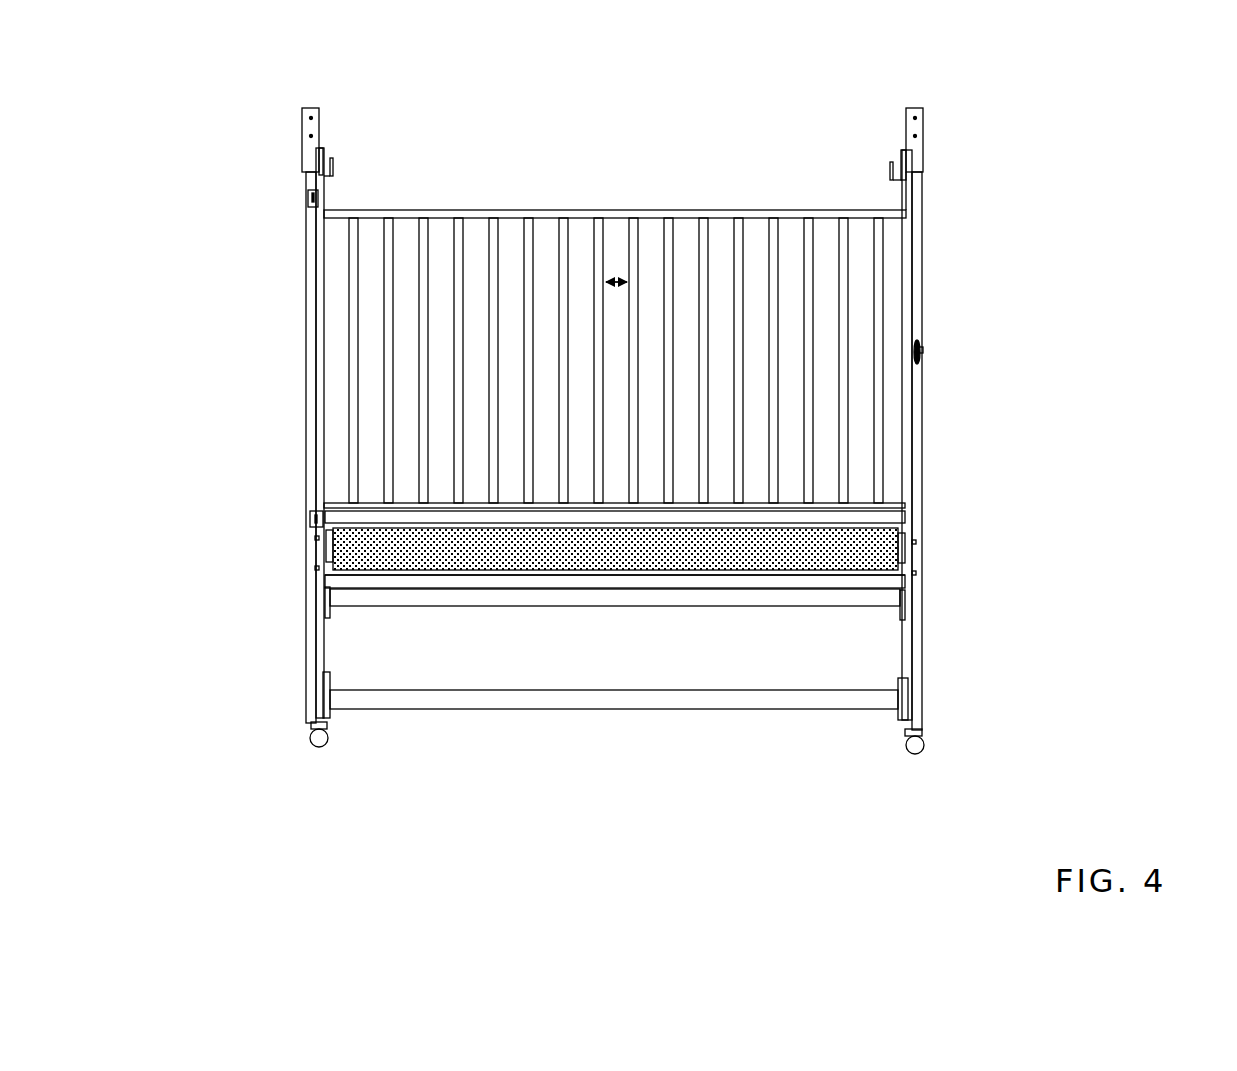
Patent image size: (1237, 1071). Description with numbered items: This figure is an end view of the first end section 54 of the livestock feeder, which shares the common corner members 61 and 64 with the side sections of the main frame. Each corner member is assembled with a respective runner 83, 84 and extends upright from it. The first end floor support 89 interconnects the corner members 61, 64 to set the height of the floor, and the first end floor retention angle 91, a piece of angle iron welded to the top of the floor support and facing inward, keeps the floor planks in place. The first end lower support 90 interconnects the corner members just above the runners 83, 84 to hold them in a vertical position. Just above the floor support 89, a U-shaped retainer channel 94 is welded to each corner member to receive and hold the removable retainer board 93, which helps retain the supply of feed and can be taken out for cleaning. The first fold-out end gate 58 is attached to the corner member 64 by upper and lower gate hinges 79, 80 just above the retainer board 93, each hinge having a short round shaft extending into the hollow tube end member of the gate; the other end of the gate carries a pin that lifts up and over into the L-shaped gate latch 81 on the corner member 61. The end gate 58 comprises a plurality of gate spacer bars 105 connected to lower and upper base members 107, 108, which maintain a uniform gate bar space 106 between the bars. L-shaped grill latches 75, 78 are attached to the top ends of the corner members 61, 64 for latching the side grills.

The first end section 54 is at (686, 104).
The first fold-out end gate 58 is at (687, 189).
The corner member 61 is at (916, 212).
The corner member 64 is at (312, 295).
The L-shaped grill latch 75 is at (890, 178).
The L-shaped grill latch 78 is at (335, 176).
The upper gate hinge 79 is at (305, 198).
The lower gate hinge 80 is at (308, 517).
The L-shaped gate latch 81 is at (922, 352).
The runner 83 is at (925, 744).
The runner 84 is at (330, 736).
The first end floor support 89 is at (812, 605).
The first end lower support 90 is at (713, 700).
The first end floor retention angle 91 is at (340, 580).
The retainer board 93 is at (876, 545).
The U-shaped retainer channel 94 is at (330, 545).
The gate spacer bars 105 is at (538, 262).
The gate bar space 106 is at (613, 272).
The lower base member 107 is at (862, 508).
The upper base member 108 is at (720, 216).